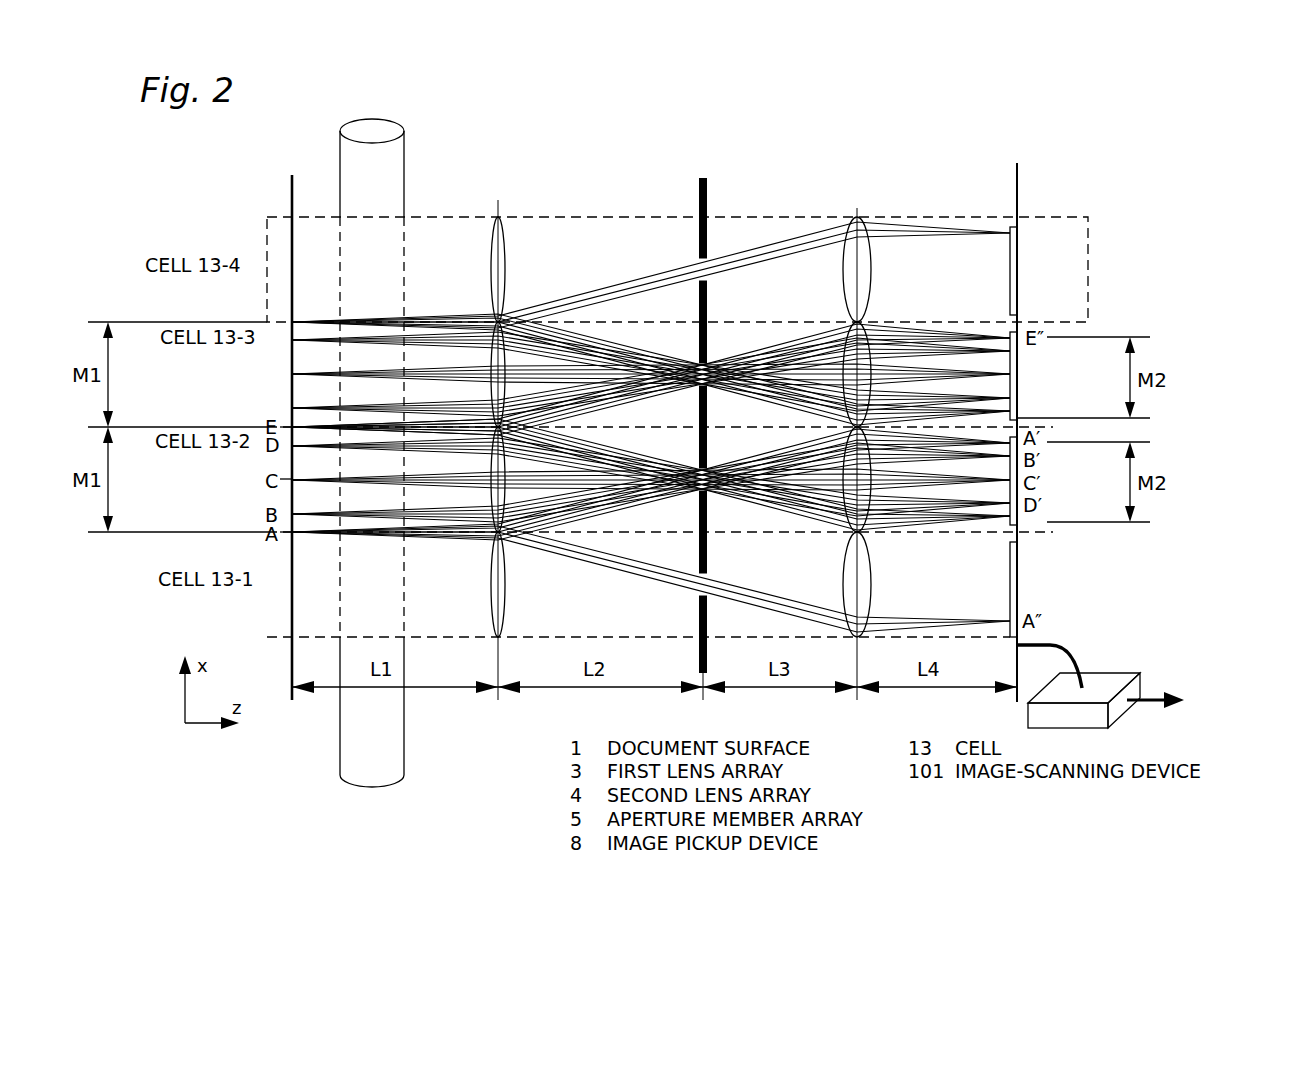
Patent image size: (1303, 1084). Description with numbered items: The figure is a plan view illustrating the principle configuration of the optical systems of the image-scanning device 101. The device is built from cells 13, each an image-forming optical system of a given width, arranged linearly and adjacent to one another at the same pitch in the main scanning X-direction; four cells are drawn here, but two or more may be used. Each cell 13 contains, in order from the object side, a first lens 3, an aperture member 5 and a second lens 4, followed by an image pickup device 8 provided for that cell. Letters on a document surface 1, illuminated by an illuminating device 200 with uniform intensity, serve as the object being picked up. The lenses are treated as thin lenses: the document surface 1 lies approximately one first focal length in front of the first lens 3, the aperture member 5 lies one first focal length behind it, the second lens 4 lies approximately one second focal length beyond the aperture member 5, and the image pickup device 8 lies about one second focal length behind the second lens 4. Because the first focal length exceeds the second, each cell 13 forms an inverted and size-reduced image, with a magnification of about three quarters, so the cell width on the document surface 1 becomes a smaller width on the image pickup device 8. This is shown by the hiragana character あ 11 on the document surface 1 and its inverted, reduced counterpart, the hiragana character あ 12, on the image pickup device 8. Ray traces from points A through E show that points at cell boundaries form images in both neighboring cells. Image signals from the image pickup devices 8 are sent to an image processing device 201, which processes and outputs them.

The document surface 1 is at (292, 179).
The first lens 3 is at (503, 232).
The second lens 4 is at (864, 239).
The aperture member 5 is at (706, 186).
The image pickup device 8 is at (1018, 180).
The hiragana character あ 11 is at (168, 497).
The hiragana character あ 12 is at (1082, 500).
The cell 13 is at (1053, 214).
The image-scanning device 101 is at (846, 167).
The illuminating device 200 is at (404, 756).
The image processing device 201 is at (1112, 672).